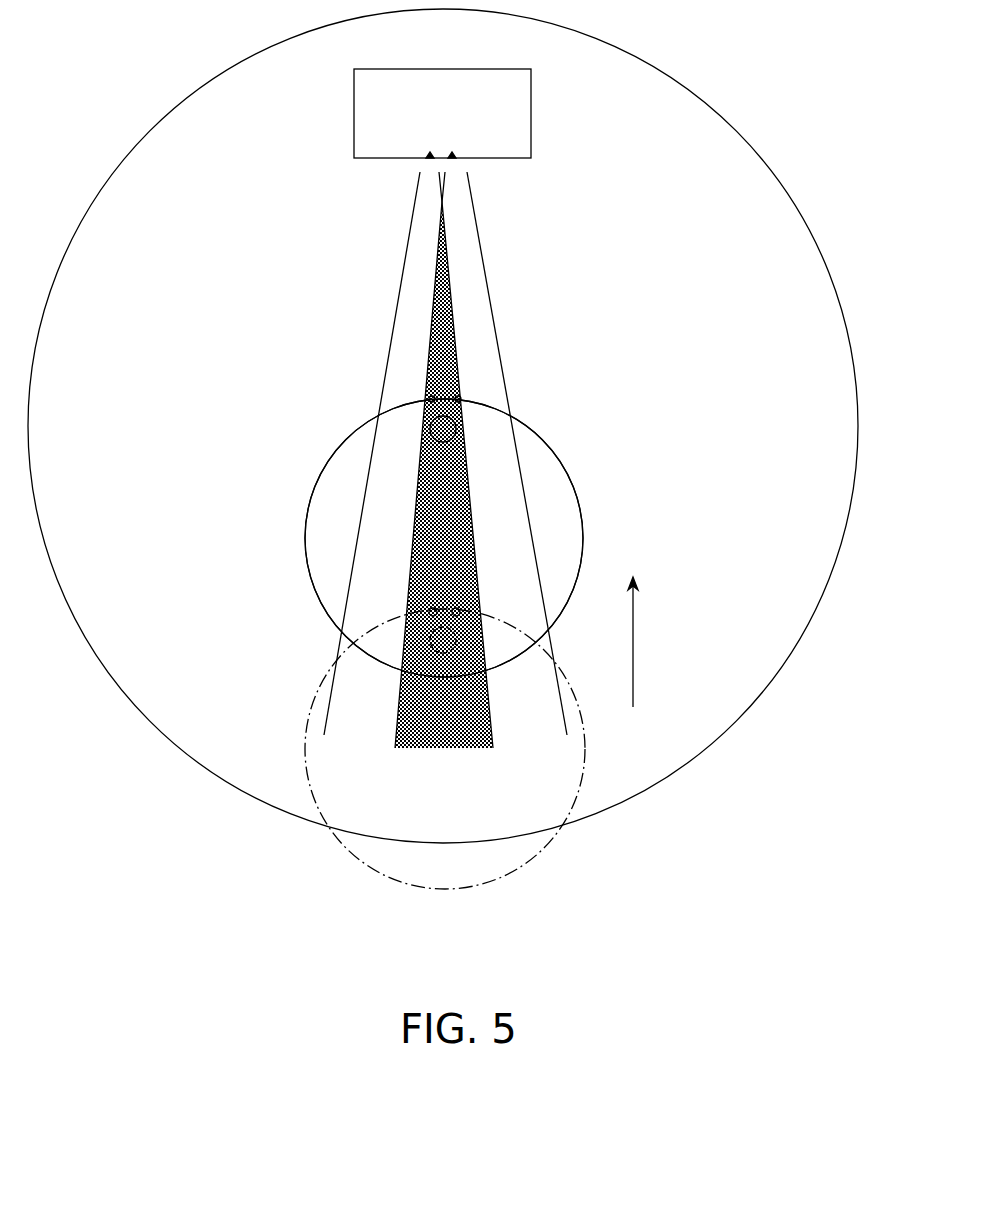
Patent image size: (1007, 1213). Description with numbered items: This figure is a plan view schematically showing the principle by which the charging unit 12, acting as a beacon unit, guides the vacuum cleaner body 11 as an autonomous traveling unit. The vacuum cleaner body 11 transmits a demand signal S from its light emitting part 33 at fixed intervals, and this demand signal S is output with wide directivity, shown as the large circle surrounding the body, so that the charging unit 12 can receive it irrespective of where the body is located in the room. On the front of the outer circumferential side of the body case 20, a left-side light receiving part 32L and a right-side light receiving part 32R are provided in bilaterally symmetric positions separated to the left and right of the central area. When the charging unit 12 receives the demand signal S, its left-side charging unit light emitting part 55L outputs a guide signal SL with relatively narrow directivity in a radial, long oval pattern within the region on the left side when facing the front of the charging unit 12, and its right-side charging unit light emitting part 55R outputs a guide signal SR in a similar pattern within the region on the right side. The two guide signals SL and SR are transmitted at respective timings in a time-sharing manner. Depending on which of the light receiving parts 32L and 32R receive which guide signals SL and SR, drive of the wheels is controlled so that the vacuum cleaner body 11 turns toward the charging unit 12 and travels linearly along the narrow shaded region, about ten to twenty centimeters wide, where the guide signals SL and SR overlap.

The demand signal S is at (642, 53).
The charging unit 12 is at (500, 69).
The left-side charging unit light emitting part 55L is at (430, 157).
The right-side charging unit light emitting part 55R is at (453, 157).
The body case 20 is at (584, 506).
The vacuum cleaner body 11 is at (578, 470).
The left-side light receiving part 32L is at (429, 401).
The right-side light receiving part 32R is at (461, 401).
The light emitting part 33 is at (430, 433).
The guide signal SL is at (488, 713).
The guide signal SR is at (400, 698).